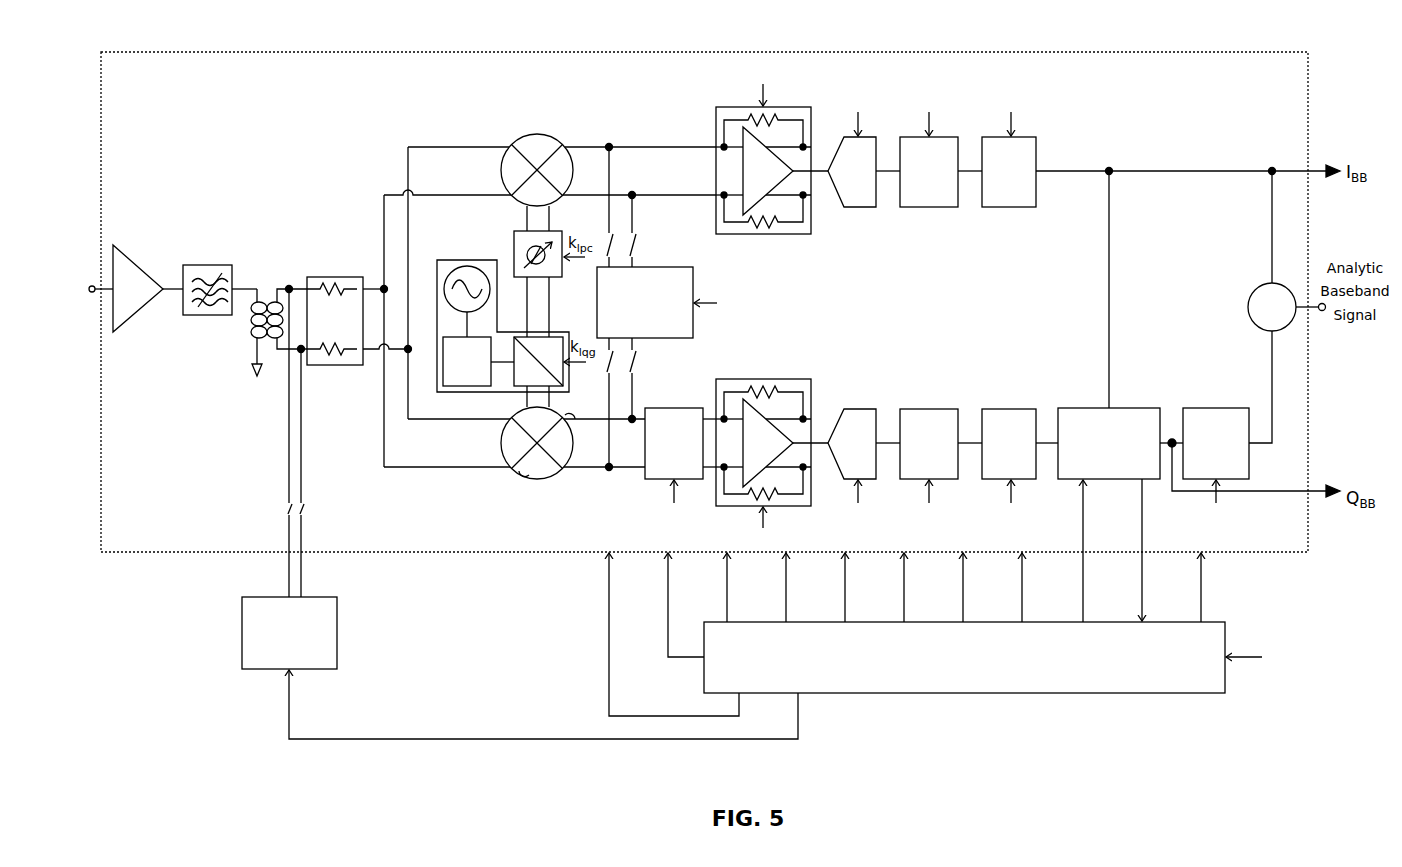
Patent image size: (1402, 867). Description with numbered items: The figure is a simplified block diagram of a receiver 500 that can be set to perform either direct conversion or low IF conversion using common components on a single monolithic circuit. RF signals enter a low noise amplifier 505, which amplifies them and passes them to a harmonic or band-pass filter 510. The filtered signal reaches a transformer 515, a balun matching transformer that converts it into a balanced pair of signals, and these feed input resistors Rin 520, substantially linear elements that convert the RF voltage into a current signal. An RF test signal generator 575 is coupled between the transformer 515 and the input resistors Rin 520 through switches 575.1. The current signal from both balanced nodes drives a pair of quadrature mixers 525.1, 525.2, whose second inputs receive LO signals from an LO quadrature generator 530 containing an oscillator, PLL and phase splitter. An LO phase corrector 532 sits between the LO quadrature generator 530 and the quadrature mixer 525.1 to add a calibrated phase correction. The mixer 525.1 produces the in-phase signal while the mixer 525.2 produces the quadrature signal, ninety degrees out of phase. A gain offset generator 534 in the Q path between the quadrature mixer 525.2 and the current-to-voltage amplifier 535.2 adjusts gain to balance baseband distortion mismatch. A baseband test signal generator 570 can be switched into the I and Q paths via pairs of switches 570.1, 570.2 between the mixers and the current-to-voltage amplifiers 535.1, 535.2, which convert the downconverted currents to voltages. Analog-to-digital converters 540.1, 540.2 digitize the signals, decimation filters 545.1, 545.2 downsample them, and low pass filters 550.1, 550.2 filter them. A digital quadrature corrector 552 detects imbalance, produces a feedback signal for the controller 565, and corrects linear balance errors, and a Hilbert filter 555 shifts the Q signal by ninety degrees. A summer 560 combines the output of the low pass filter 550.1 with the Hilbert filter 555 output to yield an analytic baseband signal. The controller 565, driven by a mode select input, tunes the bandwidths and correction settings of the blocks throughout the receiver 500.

The receiver 500 is at (151, 83).
The low noise amplifier 505 is at (128, 262).
The harmonic or band-pass filter 510 is at (213, 266).
The transformer 515 is at (257, 338).
The input resistors Rin 520 is at (352, 366).
The quadrature mixer 525.1 is at (534, 142).
The quadrature mixer 525.2 is at (536, 477).
The LO quadrature generator 530 is at (470, 266).
The LO phase corrector 532 is at (514, 250).
The gain offset generator 534 is at (648, 410).
The current-to-voltage amplifier 535.1 is at (780, 233).
The current-to-voltage amplifier 535.2 is at (780, 382).
The analog-to-digital converter 540.1 is at (850, 206).
The analog-to-digital converter 540.2 is at (848, 413).
The decimation filter 545.1 is at (930, 206).
The decimation filter 545.2 is at (928, 413).
The low pass filter 550.1 is at (1010, 206).
The low pass filter 550.2 is at (1008, 413).
The digital quadrature corrector 552 is at (1138, 413).
The Hilbert filter 555 is at (1210, 413).
The summer 560 is at (1250, 304).
The controller 565 is at (952, 680).
The baseband test signal generator 570 is at (633, 334).
The switches 570.1 is at (634, 246).
The switches 570.2 is at (638, 380).
The RF test signal generator 575 is at (278, 667).
The switches 575.1 is at (288, 508).